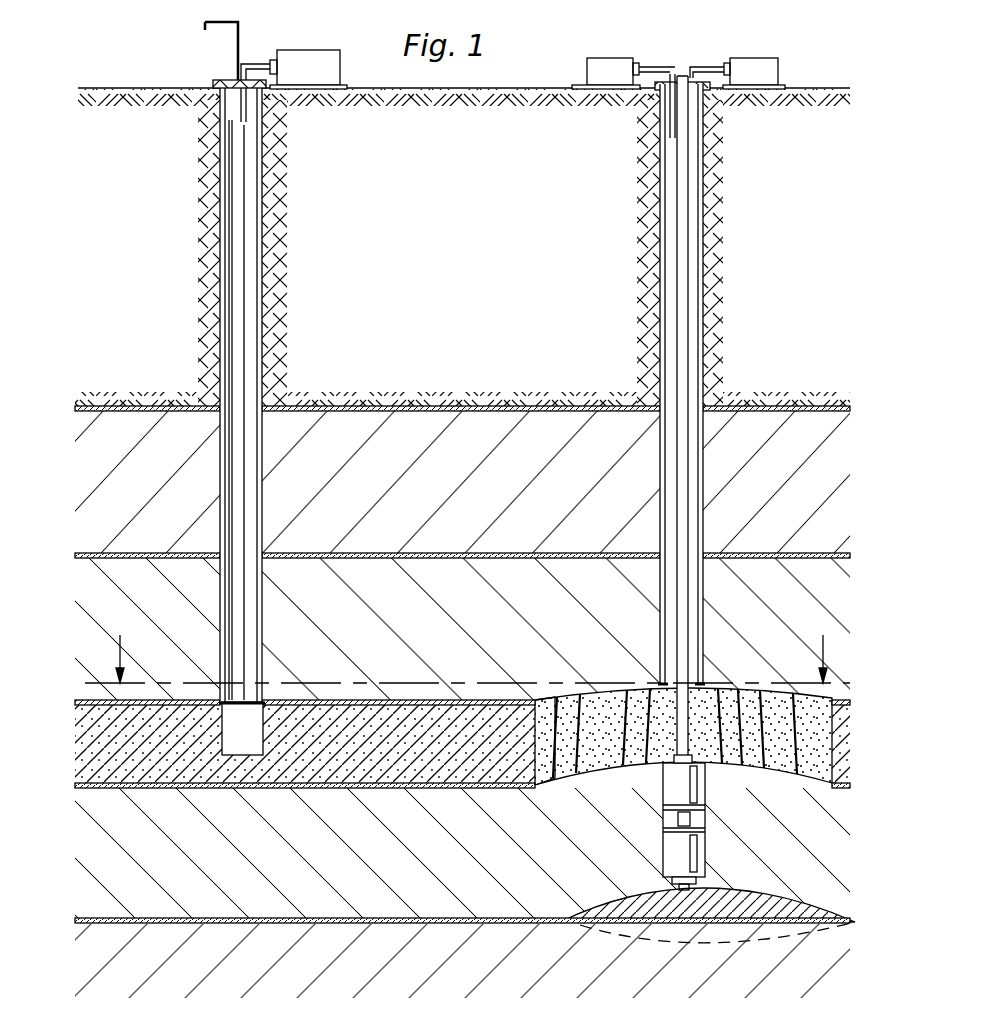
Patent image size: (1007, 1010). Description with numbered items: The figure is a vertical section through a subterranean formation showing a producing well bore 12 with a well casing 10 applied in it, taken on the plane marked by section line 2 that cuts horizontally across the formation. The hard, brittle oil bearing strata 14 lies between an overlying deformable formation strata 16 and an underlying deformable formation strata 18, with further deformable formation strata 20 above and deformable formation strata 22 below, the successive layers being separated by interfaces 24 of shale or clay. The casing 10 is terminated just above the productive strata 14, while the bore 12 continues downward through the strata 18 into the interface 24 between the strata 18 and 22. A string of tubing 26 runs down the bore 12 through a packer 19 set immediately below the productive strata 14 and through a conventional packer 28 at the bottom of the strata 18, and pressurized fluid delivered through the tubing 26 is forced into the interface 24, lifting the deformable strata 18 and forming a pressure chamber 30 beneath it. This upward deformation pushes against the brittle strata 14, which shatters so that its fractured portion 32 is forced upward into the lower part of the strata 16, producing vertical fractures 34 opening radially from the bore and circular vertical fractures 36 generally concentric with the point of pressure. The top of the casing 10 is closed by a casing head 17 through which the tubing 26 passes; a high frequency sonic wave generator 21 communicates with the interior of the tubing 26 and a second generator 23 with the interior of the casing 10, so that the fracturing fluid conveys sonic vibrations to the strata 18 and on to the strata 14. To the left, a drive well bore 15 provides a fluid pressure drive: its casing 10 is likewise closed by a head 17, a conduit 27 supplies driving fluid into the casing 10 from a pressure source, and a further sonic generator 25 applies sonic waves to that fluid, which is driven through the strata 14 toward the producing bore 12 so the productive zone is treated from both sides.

The section line 2- 2 is at (467, 654).
The well casing 10 is at (266, 258).
The well bore 12 is at (705, 826).
The oil bearing strata 14 is at (456, 715).
The drive well bore 15 is at (262, 340).
The overlying deformable formation strata 16 is at (500, 578).
The casing head 17 is at (228, 82).
The underlying deformable formation strata 18 is at (444, 905).
The packer 19 is at (690, 800).
The deformable formation strata 20 is at (508, 430).
The high frequency sonic wave generator 21 is at (745, 66).
The deformable formation strata 22 is at (365, 935).
The high frequency sonic wave generator 23 is at (603, 66).
The interfaces 24 is at (405, 412).
The high frequency sonic generator 25 is at (322, 62).
The string of tubing 26 is at (690, 356).
The conduit 27 is at (238, 44).
The packer 28 is at (695, 860).
The pressure chamber 30 is at (672, 921).
The fractured portion 32 is at (605, 710).
The vertical fractures 34 is at (555, 770).
The circular vertical fractures 36 is at (744, 690).